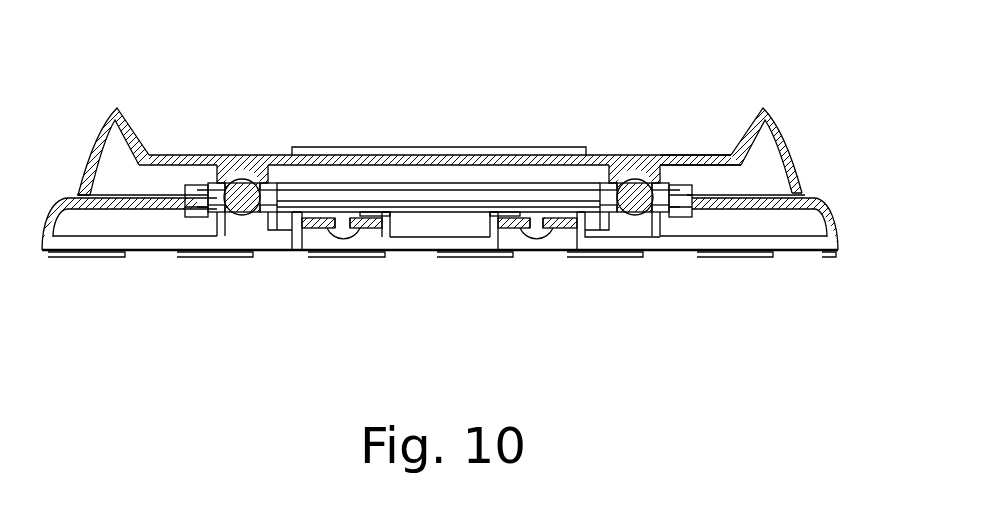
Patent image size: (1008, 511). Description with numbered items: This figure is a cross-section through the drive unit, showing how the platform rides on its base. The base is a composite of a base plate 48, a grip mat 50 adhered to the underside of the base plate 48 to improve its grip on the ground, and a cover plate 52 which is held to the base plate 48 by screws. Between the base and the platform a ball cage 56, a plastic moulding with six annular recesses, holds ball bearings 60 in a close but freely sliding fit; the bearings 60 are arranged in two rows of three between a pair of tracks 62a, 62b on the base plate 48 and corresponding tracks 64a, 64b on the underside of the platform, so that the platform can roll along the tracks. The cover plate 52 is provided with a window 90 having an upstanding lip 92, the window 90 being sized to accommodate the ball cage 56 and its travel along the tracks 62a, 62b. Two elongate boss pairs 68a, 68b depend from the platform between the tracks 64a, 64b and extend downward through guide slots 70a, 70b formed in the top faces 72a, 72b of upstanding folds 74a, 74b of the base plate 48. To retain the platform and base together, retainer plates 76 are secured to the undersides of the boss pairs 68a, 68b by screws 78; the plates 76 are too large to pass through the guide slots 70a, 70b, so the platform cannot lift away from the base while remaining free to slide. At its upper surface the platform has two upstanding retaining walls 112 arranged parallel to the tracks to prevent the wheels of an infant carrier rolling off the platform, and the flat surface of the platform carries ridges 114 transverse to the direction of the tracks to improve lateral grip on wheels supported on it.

The base plate 48 is at (88, 239).
The grip mat 50 is at (182, 257).
The cover plate 52 is at (70, 197).
The ball cage 56 is at (668, 158).
The ball bearings 60 is at (262, 157).
The track 62a is at (648, 215).
The track 62b is at (243, 215).
The track 64a is at (640, 172).
The track 64b is at (240, 172).
The elongate boss pair 68a is at (530, 240).
The elongate boss pair 68b is at (300, 240).
The guide slot 70a is at (540, 216).
The guide slot 70b is at (336, 216).
The top face 72a is at (496, 212).
The top face 72b is at (372, 212).
The upstanding fold 74a is at (468, 237).
The upstanding fold 74b is at (410, 237).
The retainer plates 76 is at (368, 228).
The screws 78 is at (342, 238).
The window 90 is at (206, 185).
The upstanding lip 92 is at (182, 183).
The retaining walls 112 is at (120, 100).
The ridges 114 is at (438, 147).